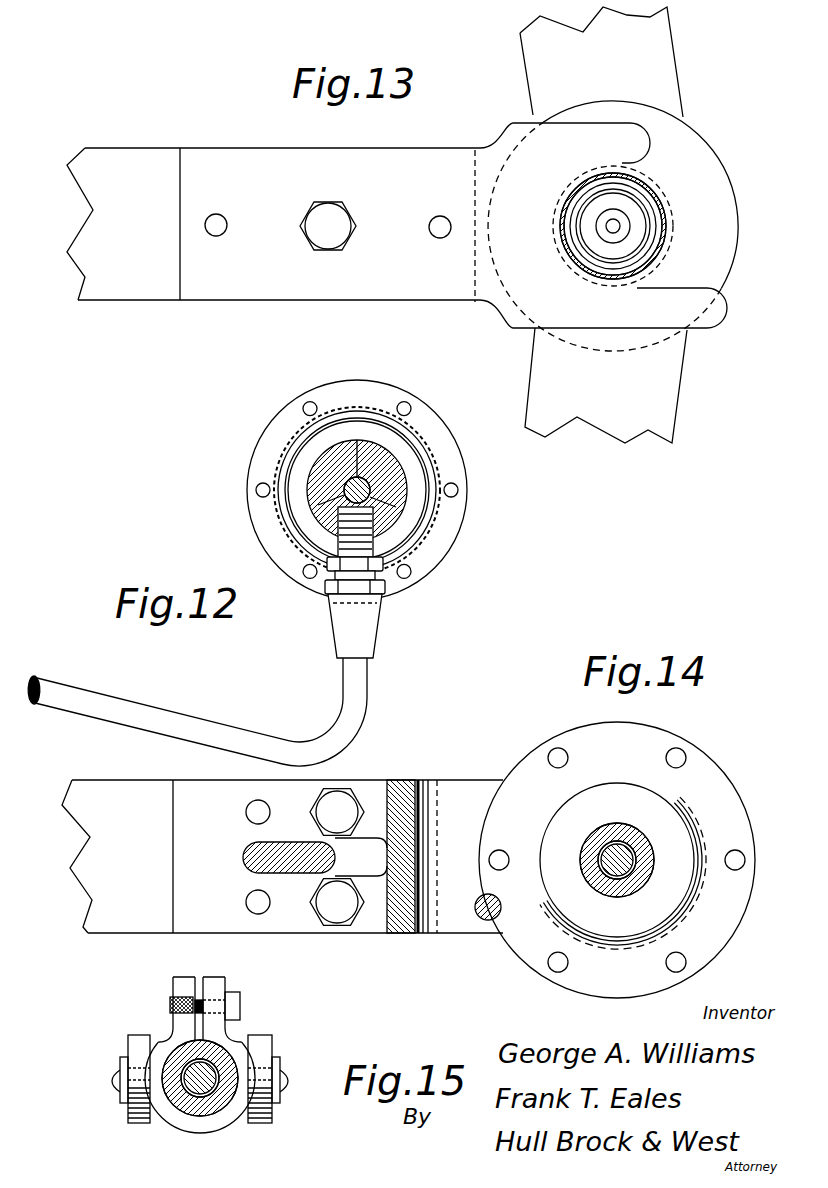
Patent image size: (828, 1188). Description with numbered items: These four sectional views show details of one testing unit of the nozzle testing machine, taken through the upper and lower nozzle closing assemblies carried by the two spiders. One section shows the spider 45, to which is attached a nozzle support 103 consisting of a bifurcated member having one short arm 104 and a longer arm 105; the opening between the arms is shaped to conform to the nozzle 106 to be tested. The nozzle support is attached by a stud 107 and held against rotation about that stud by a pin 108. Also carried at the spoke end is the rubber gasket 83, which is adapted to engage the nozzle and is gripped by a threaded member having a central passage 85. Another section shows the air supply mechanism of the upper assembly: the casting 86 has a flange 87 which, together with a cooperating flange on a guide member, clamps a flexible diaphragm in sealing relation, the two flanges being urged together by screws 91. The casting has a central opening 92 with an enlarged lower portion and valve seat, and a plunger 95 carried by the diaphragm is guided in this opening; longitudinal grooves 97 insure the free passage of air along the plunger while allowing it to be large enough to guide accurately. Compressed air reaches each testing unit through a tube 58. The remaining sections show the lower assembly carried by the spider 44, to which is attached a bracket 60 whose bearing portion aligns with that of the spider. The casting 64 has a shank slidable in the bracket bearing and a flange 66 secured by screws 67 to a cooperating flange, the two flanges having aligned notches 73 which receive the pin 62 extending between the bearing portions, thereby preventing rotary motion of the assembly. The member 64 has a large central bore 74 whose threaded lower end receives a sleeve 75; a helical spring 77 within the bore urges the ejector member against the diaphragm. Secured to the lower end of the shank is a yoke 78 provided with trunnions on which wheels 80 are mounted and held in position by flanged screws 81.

In FIG. 13, the spider 45 is at (123, 224).
In FIG. 13, the nozzle support 103 is at (330, 224).
In FIG. 13, the short arm 104 is at (565, 143).
In FIG. 13, the longer arm 105 is at (603, 308).
In FIG. 13, the stud 107 is at (327, 210).
In FIG. 13, the pin 108 is at (440, 216).
In FIG. 13, the rubber gasket 83 is at (718, 265).
In FIG. 13, the central passage 85 is at (617, 222).
In FIG. 13, the nozzle 106 is at (667, 228).
In FIG. 12, the flange 87 is at (432, 558).
In FIG. 12, the screws 91 is at (307, 403).
In FIG. 12, the central opening 92 is at (387, 463).
In FIG. 12, the casting 86 is at (390, 473).
In FIG. 12, the plunger 95 is at (346, 487).
In FIG. 12, the longitudinal grooves 97 is at (358, 476).
In FIG. 12, the tube 58 is at (368, 692).
In FIG. 14, the spider 44 is at (282, 856).
In FIG. 14, the bracket 60 is at (403, 933).
In FIG. 14, the flange 66 is at (722, 800).
In FIG. 14, the screws 67 is at (733, 870).
In FIG. 14, the central bore 74 is at (645, 837).
In FIG. 14, the casting 64 is at (620, 822).
In FIG. 15, the casting 64 is at (230, 1050).
In FIG. 14, the helical spring 77 is at (587, 843).
In FIG. 14, the pin 62 is at (480, 897).
In FIG. 14, the notches 73 is at (497, 900).
In FIG. 15, the yoke 78 is at (223, 1123).
In FIG. 15, the sleeve 75 is at (175, 1045).
In FIG. 15, the wheels 80 is at (130, 1118).
In FIG. 15, the flanged screws 81 is at (115, 1075).